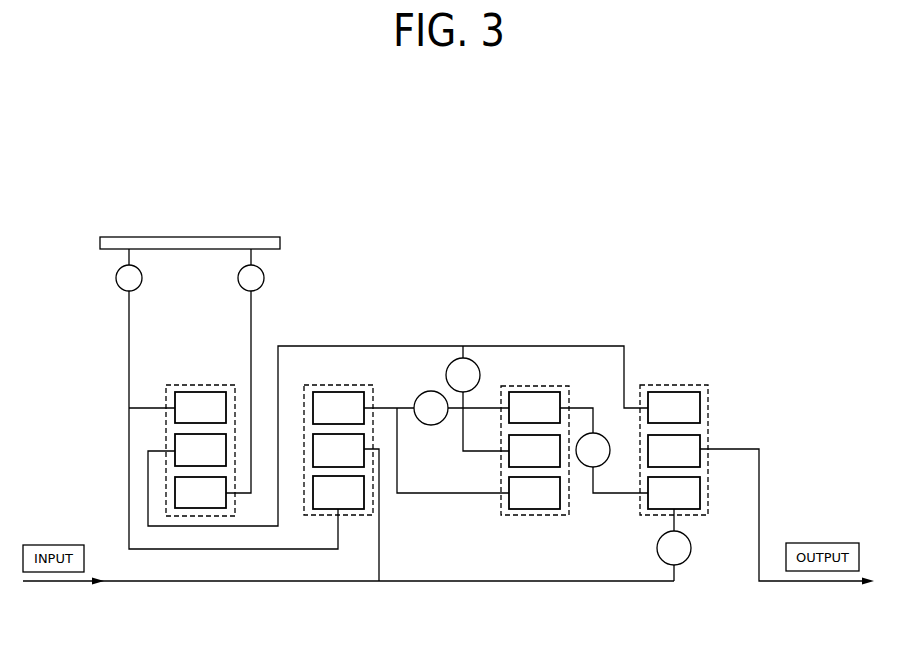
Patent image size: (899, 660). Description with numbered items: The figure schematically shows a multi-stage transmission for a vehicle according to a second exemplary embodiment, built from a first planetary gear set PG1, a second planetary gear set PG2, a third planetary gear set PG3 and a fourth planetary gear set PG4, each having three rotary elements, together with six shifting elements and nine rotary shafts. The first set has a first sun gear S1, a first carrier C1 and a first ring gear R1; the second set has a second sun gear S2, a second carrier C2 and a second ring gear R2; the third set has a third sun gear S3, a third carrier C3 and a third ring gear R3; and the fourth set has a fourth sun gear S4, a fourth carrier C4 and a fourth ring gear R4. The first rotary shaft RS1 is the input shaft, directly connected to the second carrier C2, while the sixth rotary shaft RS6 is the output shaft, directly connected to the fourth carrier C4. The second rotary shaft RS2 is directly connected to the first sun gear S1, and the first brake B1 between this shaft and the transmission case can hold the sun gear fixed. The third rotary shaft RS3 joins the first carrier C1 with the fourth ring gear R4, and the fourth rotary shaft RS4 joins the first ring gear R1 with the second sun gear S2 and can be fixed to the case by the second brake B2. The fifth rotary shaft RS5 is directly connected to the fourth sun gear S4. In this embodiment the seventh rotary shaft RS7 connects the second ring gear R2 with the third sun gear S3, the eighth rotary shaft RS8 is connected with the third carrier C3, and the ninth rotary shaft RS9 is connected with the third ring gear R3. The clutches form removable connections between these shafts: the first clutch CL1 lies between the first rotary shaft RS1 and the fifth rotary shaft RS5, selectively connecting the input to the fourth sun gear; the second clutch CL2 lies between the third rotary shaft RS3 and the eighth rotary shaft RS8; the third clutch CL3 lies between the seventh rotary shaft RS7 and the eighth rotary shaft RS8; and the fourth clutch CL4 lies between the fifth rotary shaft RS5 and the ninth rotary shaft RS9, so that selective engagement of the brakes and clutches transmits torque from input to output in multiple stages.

The first rotary shaft RS1 is at (380, 556).
The second rotary shaft RS2 is at (243, 497).
The third rotary shaft RS3 is at (165, 527).
The fourth rotary shaft RS4 is at (322, 549).
The fifth rotary shaft RS5 is at (676, 524).
The sixth rotary shaft RS6 is at (744, 448).
The seventh rotary shaft RS7 is at (383, 405).
The eighth rotary shaft RS8 is at (478, 438).
The ninth rotary shaft RS9 is at (583, 405).
The first planetary gear set PG1 is at (200, 441).
The second planetary gear set PG2 is at (338, 440).
The third planetary gear set PG3 is at (535, 440).
The fourth planetary gear set PG4 is at (674, 440).
The first ring gear R1 is at (200, 407).
The first carrier C1 is at (200, 450).
The first sun gear S1 is at (200, 492).
The second ring gear R2 is at (338, 408).
The second carrier C2 is at (338, 450).
The second sun gear S2 is at (338, 492).
The third ring gear R3 is at (534, 407).
The third carrier C3 is at (534, 451).
The third sun gear S3 is at (534, 493).
The fourth ring gear R4 is at (674, 407).
The fourth carrier C4 is at (674, 451).
The fourth sun gear S4 is at (674, 493).
The first brake B1 is at (251, 270).
The second brake B2 is at (129, 270).
The first clutch CL1 is at (674, 556).
The second clutch CL2 is at (463, 375).
The third clutch CL3 is at (431, 408).
The fourth clutch CL4 is at (593, 450).